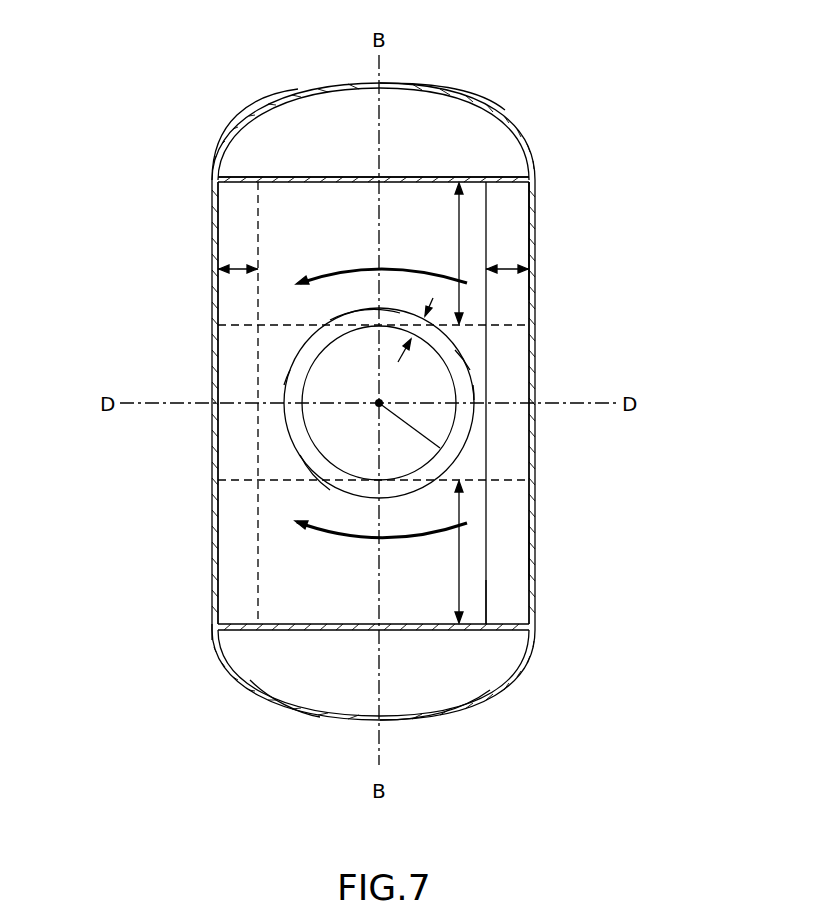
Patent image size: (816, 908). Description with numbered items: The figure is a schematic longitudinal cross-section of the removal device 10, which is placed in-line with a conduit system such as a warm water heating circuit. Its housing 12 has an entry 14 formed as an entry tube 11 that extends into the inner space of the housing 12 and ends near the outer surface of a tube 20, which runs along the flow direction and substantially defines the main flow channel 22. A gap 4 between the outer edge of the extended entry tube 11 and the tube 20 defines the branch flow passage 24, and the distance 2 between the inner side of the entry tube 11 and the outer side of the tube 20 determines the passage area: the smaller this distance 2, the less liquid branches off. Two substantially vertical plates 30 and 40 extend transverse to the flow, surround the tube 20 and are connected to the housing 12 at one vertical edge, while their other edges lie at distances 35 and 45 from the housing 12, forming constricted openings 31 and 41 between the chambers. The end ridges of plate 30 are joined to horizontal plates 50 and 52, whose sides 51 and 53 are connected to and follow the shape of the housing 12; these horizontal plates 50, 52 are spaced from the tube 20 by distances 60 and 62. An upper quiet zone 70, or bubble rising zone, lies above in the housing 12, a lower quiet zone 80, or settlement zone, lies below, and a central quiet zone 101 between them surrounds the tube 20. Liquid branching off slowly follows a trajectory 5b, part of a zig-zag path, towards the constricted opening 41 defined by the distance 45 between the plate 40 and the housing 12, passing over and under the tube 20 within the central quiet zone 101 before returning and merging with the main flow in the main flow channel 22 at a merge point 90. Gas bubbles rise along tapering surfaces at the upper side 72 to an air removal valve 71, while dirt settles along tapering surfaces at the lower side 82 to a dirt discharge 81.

The removal device 10 is at (522, 108).
The housing 12 is at (211, 198).
The upper quiet zone 70 is at (334, 152).
The lower quiet zone 80 is at (427, 684).
The upper side 72 is at (298, 94).
The air removal valve 71 is at (392, 86).
The lower side 82 is at (311, 716).
The dirt discharge 81 is at (390, 720).
The horizontal plate 50 is at (474, 178).
The side of horizontal plate 51 is at (536, 180).
The constricted opening 31 is at (519, 245).
The distance 35 is at (510, 270).
The distance 45 is at (238, 267).
The constricted opening 41 is at (233, 308).
The plate 30 is at (313, 246).
The plate 40 is at (520, 232).
The distance 60 is at (460, 232).
The distance 62 is at (460, 565).
The branch flow trajectory part 5b is at (365, 267).
The tube 20 is at (300, 424).
The main flow channel 22 is at (355, 382).
The branch flow passage 24 is at (312, 462).
The gap 4 is at (362, 323).
The distance 2 is at (415, 320).
The horizontal plate 52 is at (296, 387).
The entry 14 is at (463, 358).
The entry tube 11 is at (466, 387).
The side of horizontal plate 53 is at (463, 412).
The merge point 90 is at (452, 455).
The central quiet zone 101 is at (507, 600).